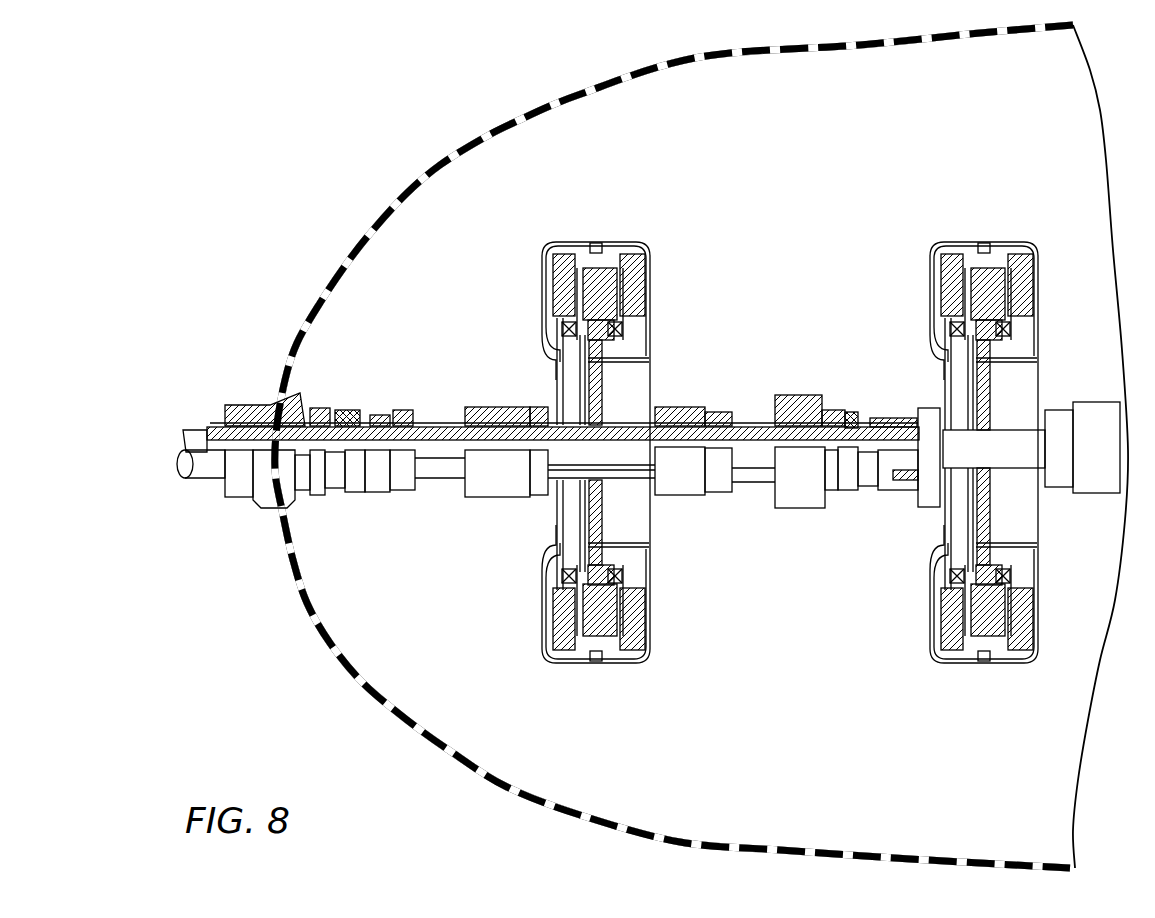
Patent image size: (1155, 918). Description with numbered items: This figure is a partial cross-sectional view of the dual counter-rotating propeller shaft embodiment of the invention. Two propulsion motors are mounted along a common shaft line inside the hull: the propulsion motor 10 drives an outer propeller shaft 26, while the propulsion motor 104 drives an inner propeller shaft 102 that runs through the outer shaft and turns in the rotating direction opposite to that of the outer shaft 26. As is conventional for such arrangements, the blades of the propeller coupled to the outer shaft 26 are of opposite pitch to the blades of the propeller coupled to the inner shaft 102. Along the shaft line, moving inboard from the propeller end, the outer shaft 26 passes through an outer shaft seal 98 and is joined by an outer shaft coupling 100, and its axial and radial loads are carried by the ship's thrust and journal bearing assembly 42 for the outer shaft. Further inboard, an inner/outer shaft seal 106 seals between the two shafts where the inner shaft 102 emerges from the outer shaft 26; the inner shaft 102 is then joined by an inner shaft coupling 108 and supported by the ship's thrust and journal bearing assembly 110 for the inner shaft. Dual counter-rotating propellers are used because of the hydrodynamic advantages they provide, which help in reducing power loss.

The propulsion motor 10 is at (580, 233).
The propulsion motor 104 is at (918, 237).
The outer propeller shaft 26 is at (192, 427).
The outer shaft seal 98 is at (338, 409).
The ship's thrust and journal bearing assembly 42 is at (681, 406).
The outer shaft coupling 100 is at (493, 481).
The inner propeller shaft 102 is at (205, 433).
The inner/outer shaft seal 106 is at (803, 491).
The inner shaft coupling 108 is at (926, 486).
The ship's thrust and journal bearing assembly 110 is at (1098, 408).